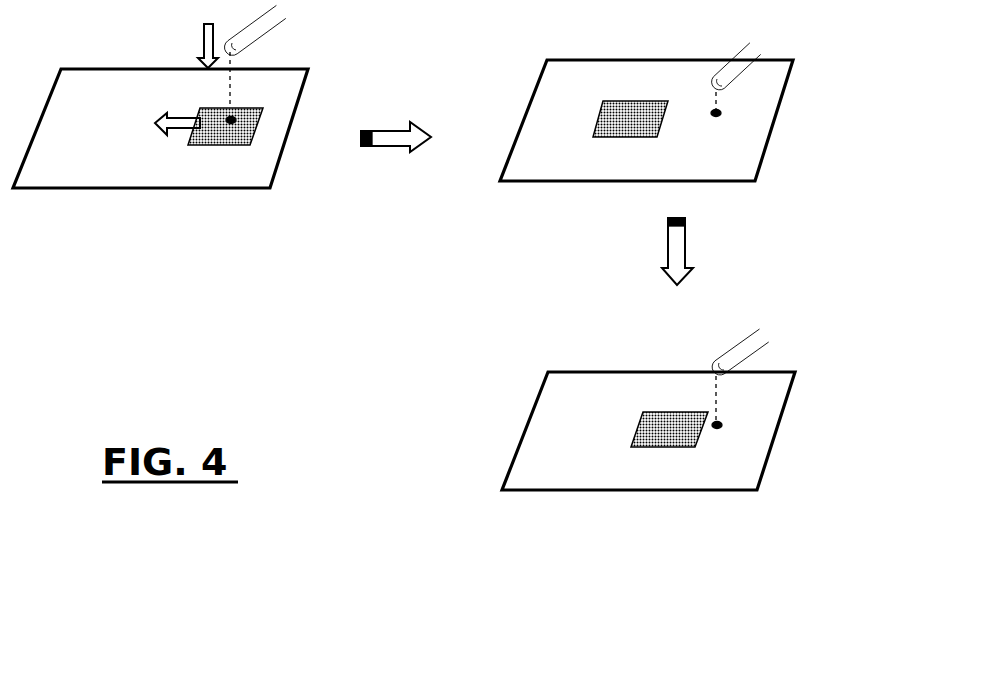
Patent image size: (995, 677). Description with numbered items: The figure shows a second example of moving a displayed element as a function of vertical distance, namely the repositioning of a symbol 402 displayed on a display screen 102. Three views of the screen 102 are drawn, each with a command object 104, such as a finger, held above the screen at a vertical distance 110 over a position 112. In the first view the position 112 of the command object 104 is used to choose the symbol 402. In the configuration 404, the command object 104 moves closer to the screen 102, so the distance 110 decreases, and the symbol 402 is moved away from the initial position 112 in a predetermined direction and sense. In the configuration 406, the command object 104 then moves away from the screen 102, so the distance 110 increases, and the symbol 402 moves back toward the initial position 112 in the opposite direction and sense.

The display screen 102 is at (305, 85).
The command object 104 is at (258, 20).
The vertical distance 110 is at (228, 87).
The position 112 is at (235, 120).
The symbol 402 is at (214, 148).
The configuration 404 is at (455, 207).
The configuration 406 is at (454, 408).